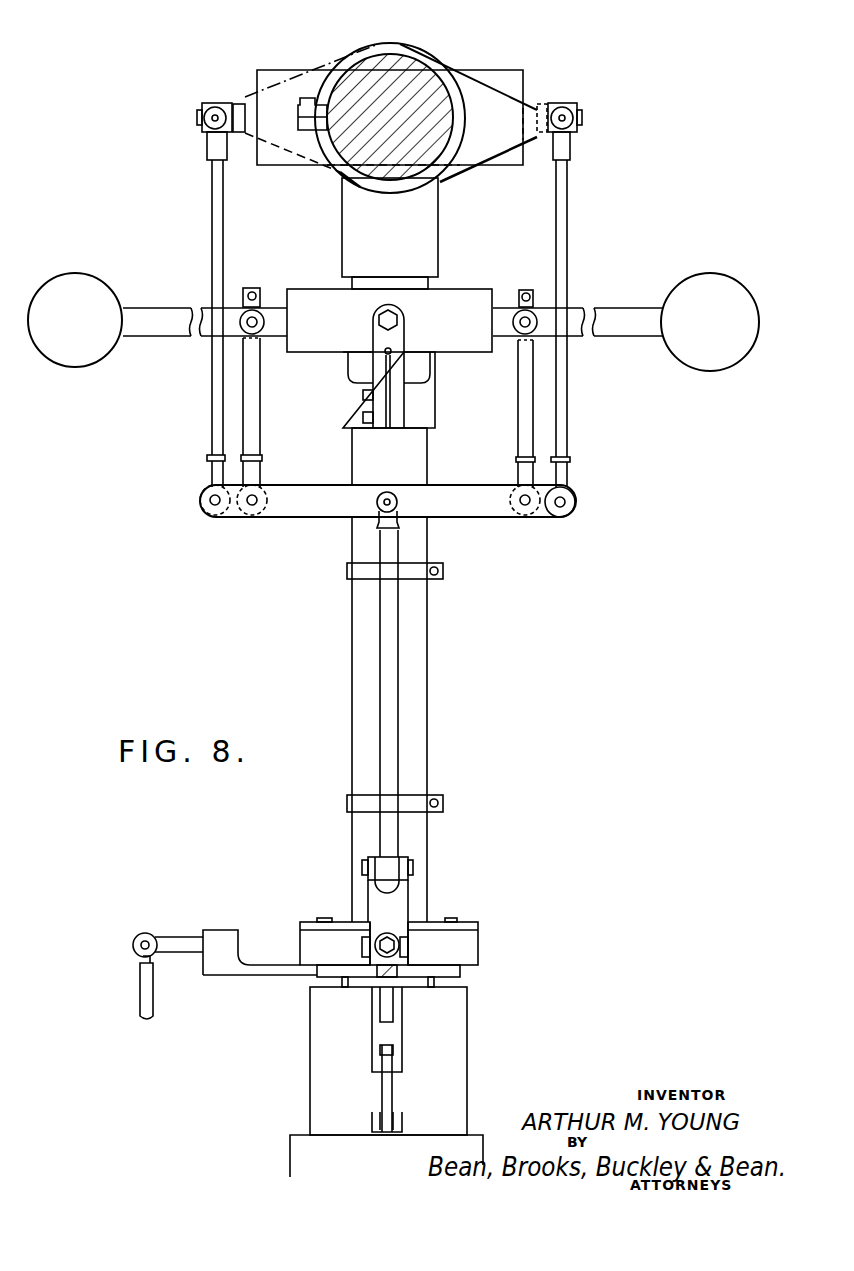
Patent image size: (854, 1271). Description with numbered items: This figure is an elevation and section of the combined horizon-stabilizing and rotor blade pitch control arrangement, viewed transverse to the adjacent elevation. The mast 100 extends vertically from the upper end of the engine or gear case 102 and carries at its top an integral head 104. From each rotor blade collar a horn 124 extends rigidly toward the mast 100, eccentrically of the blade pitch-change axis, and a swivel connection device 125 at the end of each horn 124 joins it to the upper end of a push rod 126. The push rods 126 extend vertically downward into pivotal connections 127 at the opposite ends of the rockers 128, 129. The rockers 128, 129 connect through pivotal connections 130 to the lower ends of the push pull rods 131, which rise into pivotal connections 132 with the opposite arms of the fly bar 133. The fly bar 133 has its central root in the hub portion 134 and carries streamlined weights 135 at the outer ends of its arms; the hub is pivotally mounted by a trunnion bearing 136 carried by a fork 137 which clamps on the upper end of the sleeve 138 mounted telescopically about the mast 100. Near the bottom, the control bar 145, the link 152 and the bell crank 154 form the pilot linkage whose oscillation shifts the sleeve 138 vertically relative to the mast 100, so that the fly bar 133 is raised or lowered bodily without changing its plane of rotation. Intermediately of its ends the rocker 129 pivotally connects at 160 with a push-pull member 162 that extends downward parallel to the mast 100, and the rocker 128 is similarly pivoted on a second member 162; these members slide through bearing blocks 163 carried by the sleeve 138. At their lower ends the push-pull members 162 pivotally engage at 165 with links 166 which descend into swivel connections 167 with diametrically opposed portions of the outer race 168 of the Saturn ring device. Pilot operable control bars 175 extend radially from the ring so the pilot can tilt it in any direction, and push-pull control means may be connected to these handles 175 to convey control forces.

The mast 100 is at (415, 285).
The engine or gear case 102 is at (297, 1153).
The head 104 is at (390, 227).
The horn 124 is at (275, 85).
The swivel connection device 125 is at (215, 107).
The push rod 126 is at (217, 202).
The pivotal connection 127 is at (207, 497).
The rocker 128 is at (235, 517).
The rocker 129 is at (500, 510).
The pivotal connection 130 is at (255, 512).
The push pull rod 131 is at (247, 390).
The pivotal connection 132 is at (243, 332).
The fly bar 133 is at (622, 315).
The hub portion 134 is at (478, 288).
The streamlined weight 135 is at (98, 292).
The trunnion bearing 136 is at (387, 318).
The fork 137 is at (380, 378).
The sleeve 138 is at (357, 452).
The control bar 145 is at (383, 1003).
The link 152 is at (392, 1037).
The bell crank 154 is at (382, 1098).
The pivotal connection 160 is at (398, 494).
The push-pull member 162 is at (390, 713).
The bearing block 163 is at (352, 565).
The pivotal engagement 165 is at (365, 863).
The link 166 is at (377, 893).
The swivel connection 167 is at (407, 932).
The outer race 168 is at (478, 948).
The pilot operable control bar 175 is at (267, 968).